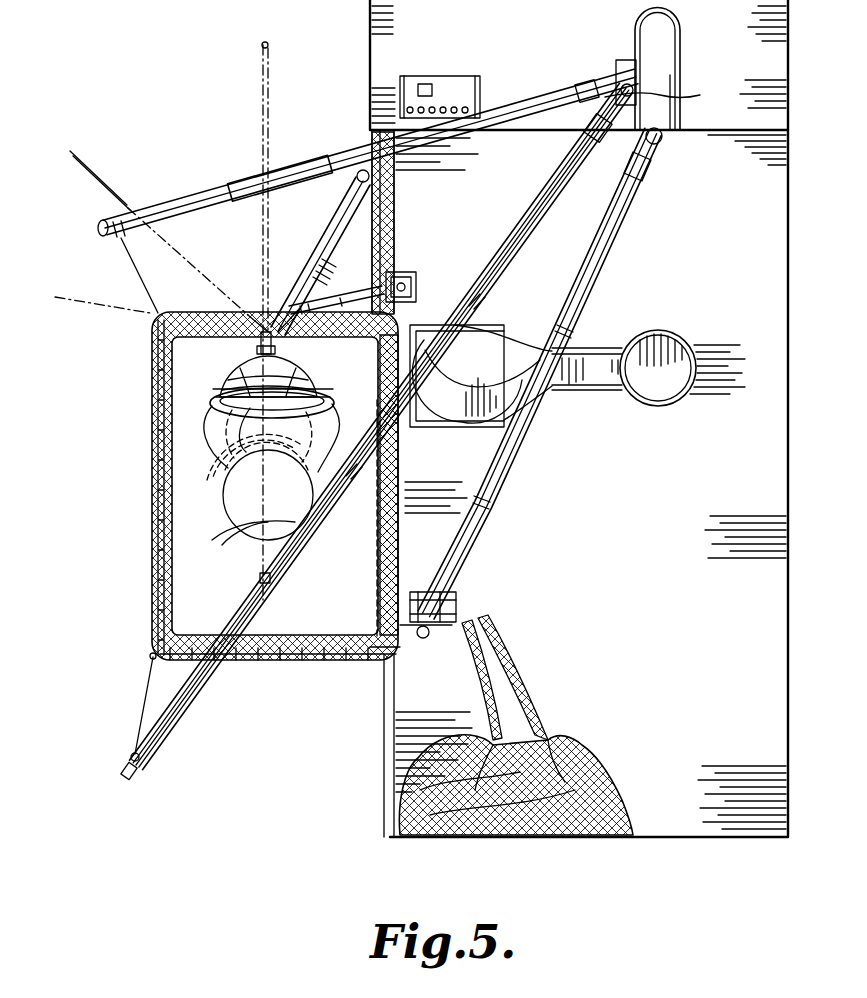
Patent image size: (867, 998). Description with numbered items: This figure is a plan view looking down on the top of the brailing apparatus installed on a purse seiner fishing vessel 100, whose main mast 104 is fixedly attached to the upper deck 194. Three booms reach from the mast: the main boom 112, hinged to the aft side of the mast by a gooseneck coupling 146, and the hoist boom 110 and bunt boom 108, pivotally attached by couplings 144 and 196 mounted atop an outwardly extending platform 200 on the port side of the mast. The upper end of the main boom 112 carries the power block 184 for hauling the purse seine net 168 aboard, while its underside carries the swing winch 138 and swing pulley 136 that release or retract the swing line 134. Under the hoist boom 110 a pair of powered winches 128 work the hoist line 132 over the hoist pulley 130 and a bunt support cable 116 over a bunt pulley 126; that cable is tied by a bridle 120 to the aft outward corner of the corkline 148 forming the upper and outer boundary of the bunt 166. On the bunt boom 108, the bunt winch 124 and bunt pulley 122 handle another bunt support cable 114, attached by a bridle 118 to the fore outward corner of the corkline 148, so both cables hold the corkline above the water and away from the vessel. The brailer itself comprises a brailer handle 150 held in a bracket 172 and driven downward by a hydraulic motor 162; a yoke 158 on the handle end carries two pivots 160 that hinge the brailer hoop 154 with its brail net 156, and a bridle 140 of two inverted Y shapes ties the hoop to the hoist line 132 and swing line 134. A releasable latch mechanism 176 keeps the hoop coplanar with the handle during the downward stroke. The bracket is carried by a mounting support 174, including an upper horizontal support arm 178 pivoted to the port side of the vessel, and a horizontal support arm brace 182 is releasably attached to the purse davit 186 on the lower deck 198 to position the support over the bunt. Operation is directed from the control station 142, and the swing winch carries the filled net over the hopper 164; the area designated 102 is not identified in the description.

The fishing vessel 100 is at (733, 627).
The container 102 is at (283, 797).
The main mast 104 is at (672, 58).
The bunt boom 108 is at (333, 162).
The hoist boom 110 is at (180, 714).
The main boom 112 is at (510, 458).
The bunt support cable 114 is at (160, 286).
The bunt support cable 116 is at (147, 698).
The bridle 118 is at (140, 312).
The bridle 120 is at (150, 656).
The bunt pulley 122 is at (110, 240).
The bunt winch 124 is at (590, 80).
The bunt pulley 126 is at (132, 752).
The powered winches 128 is at (605, 146).
The hoist pulley 130 is at (260, 578).
The hoist line 132 is at (212, 540).
The swing line 134 is at (512, 392).
The swing pulley 136 is at (548, 326).
The swing winch 138 is at (655, 178).
The bridle 140 is at (268, 491).
The control station 142 is at (465, 86).
The coupling 144 is at (700, 97).
The coupling 146 is at (663, 142).
The corkline 148 is at (317, 661).
The brailer handle 150 is at (266, 290).
The brailer hoop 154 is at (242, 452).
The brail net 156 is at (232, 378).
The yoke 158 is at (205, 404).
The pivots 160 is at (198, 432).
The hydraulic motor 162 is at (262, 318).
The hopper 164 is at (530, 314).
The bunt 166 is at (343, 601).
The purse seine net 168 is at (520, 708).
The bracket 172 is at (288, 354).
The mounting support 174 is at (402, 196).
The releasable latch mechanism 176 is at (226, 396).
The upper horizontal support arm 178 is at (340, 212).
The horizontal support arm brace 182 is at (342, 300).
The power block 184 is at (460, 612).
The purse davit 186 is at (416, 275).
The upper deck 194 is at (450, 41).
The coupling 196 is at (624, 65).
The lower deck 198 is at (683, 511).
The platform 200 is at (615, 100).